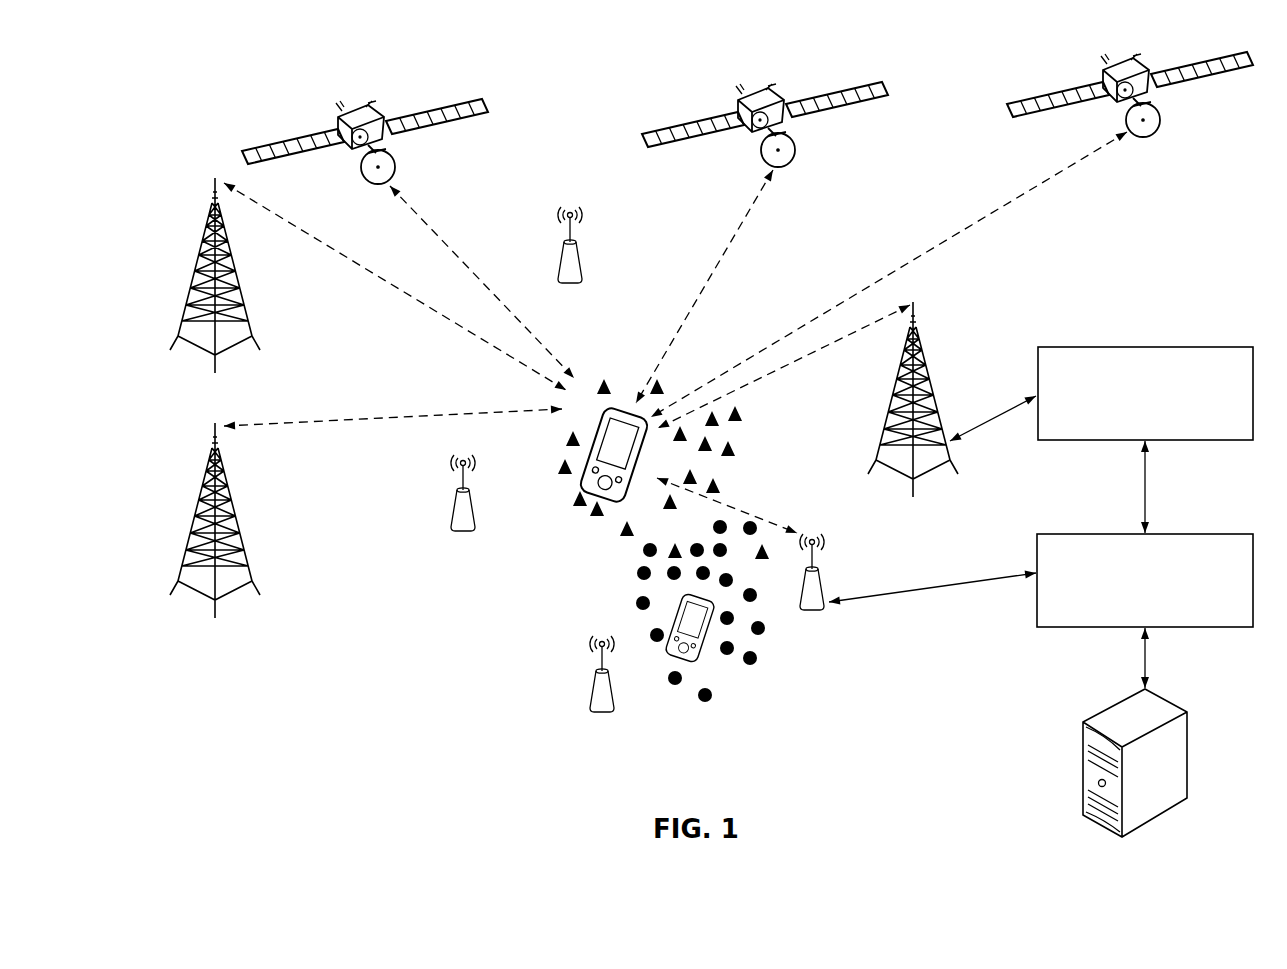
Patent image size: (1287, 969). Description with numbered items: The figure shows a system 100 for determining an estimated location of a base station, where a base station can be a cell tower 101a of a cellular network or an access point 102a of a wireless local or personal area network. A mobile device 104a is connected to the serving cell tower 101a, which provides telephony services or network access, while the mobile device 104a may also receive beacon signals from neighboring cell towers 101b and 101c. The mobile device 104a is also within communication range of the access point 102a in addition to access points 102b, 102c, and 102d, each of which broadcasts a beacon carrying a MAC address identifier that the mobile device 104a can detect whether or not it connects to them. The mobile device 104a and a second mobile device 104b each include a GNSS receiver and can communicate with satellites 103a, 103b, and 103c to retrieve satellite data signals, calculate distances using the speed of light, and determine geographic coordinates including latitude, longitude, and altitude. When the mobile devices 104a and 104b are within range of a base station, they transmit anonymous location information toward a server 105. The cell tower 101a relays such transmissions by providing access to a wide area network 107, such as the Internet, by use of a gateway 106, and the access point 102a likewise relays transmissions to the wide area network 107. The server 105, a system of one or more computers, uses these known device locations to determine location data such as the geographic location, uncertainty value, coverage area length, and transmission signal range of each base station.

The system 100 is at (200, 82).
The cell tower 101a is at (925, 471).
The cell tower 101b is at (226, 592).
The cell tower 101c is at (226, 347).
The access point 102a is at (823, 610).
The access point 102b is at (473, 533).
The access point 102c is at (612, 712).
The access point 102d is at (580, 285).
The satellite 103a is at (258, 142).
The satellite 103b is at (660, 126).
The satellite 103c is at (1025, 98).
The mobile device 104a is at (638, 492).
The mobile device 104b is at (708, 648).
The server 105 is at (1189, 800).
The gateway 106 is at (1145, 393).
The wide area network 107 is at (1145, 580).